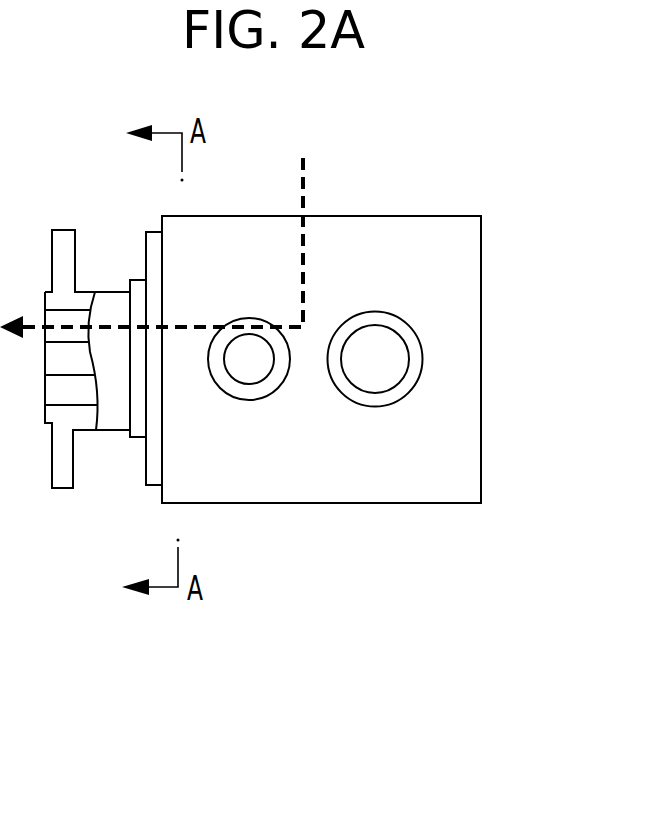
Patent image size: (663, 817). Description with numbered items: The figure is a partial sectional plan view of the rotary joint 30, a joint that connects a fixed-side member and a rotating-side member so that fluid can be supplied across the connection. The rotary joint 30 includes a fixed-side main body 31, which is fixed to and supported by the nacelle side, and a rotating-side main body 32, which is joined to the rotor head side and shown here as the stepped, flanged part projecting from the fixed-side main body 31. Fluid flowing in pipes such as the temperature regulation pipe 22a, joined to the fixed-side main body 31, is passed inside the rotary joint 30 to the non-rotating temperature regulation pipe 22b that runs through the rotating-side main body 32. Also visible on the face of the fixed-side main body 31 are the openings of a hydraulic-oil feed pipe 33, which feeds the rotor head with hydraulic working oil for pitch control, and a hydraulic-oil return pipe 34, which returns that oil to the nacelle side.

The rotary joint 30 is at (452, 208).
The fixed-side main body 31 is at (337, 503).
The rotating-side main body 32 is at (108, 430).
The hydraulic-oil feed pipe 33 is at (382, 407).
The hydraulic-oil return pipe 34 is at (242, 400).
The temperature regulation pipe 22a is at (305, 185).
The temperature regulation pipe 22b is at (180, 322).